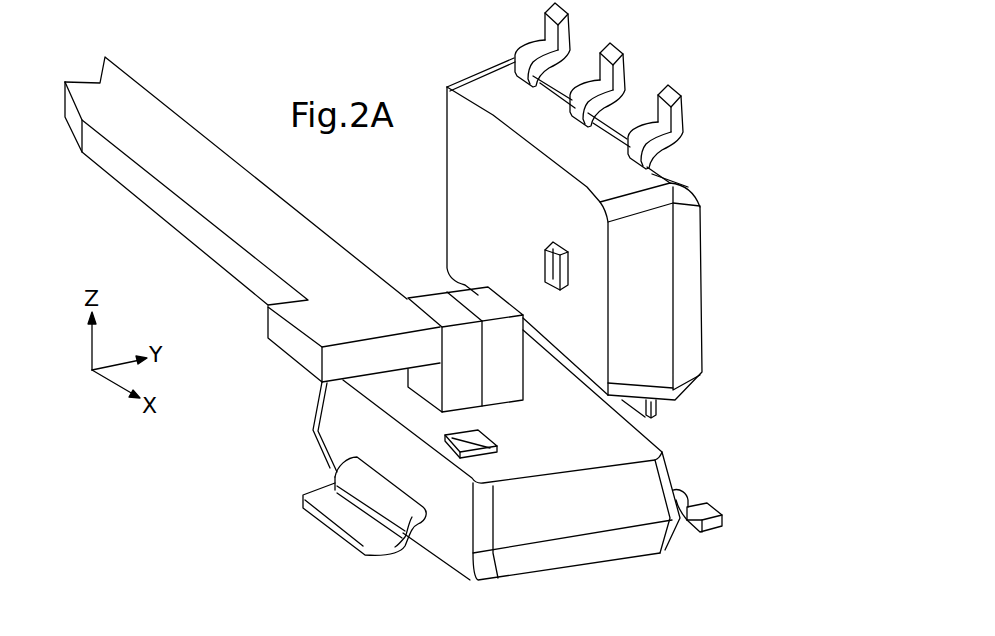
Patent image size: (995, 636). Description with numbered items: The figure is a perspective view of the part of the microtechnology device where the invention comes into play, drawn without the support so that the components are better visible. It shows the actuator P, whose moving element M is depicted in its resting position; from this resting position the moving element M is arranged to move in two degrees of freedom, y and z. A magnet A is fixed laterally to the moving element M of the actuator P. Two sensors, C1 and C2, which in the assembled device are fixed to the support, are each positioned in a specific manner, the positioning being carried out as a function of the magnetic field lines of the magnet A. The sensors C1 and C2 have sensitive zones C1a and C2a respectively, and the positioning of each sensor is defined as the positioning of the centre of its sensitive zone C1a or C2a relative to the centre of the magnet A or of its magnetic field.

The actuator P is at (128, 173).
The moving element M is at (308, 355).
The magnet A is at (430, 300).
The sensor C2 is at (692, 275).
The sensitive zone C2a is at (545, 257).
The sensor C1 is at (615, 547).
The sensitive zone C1a is at (492, 426).